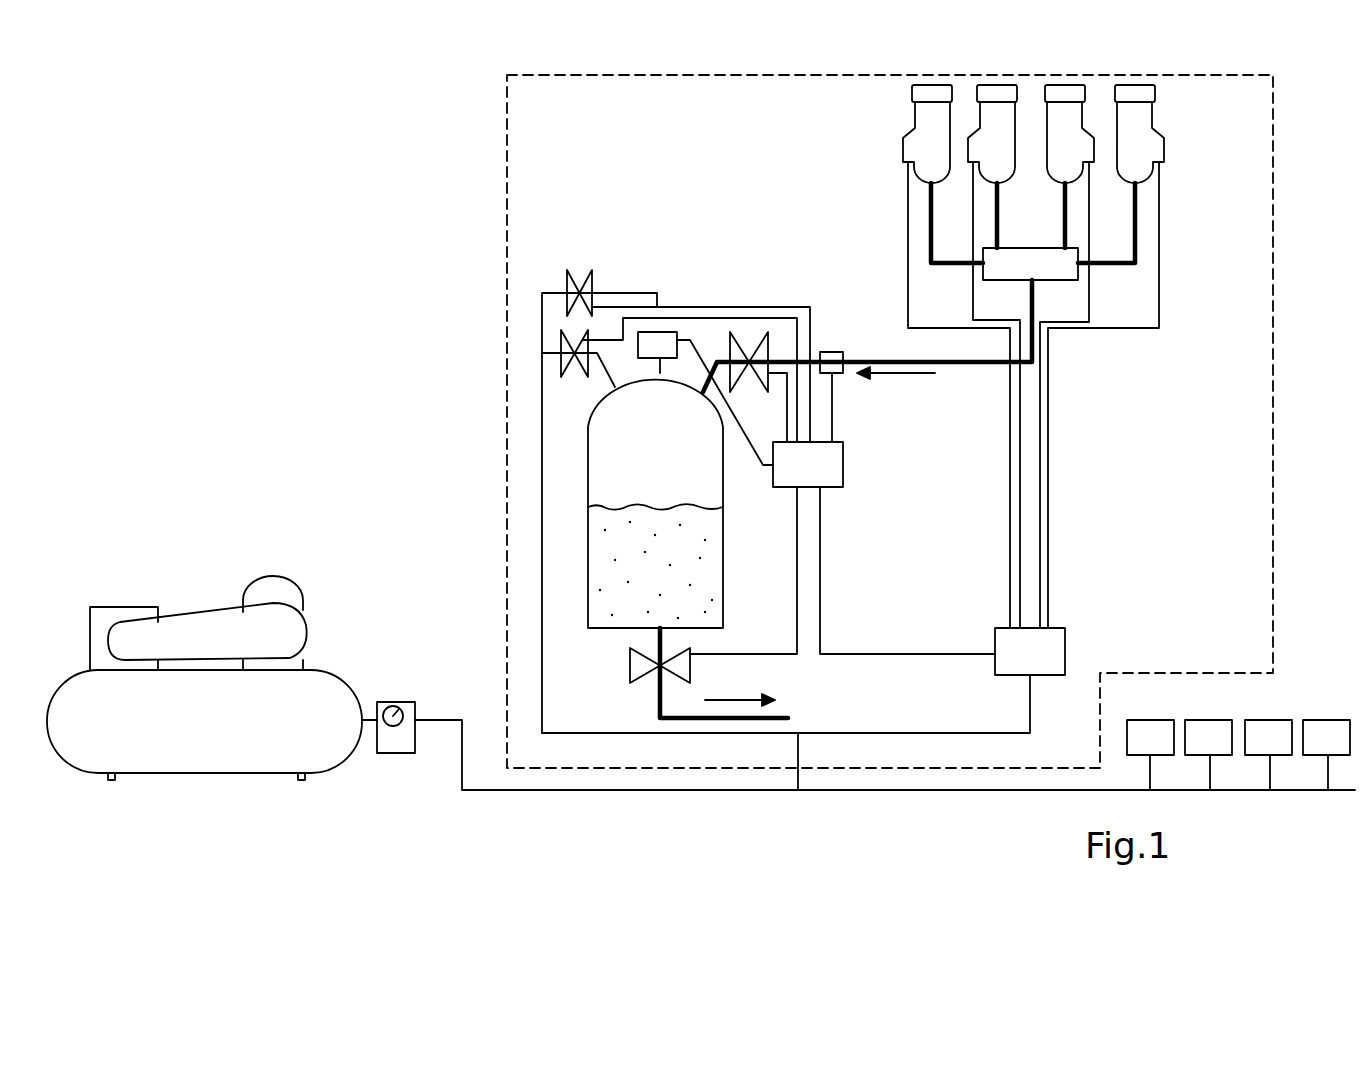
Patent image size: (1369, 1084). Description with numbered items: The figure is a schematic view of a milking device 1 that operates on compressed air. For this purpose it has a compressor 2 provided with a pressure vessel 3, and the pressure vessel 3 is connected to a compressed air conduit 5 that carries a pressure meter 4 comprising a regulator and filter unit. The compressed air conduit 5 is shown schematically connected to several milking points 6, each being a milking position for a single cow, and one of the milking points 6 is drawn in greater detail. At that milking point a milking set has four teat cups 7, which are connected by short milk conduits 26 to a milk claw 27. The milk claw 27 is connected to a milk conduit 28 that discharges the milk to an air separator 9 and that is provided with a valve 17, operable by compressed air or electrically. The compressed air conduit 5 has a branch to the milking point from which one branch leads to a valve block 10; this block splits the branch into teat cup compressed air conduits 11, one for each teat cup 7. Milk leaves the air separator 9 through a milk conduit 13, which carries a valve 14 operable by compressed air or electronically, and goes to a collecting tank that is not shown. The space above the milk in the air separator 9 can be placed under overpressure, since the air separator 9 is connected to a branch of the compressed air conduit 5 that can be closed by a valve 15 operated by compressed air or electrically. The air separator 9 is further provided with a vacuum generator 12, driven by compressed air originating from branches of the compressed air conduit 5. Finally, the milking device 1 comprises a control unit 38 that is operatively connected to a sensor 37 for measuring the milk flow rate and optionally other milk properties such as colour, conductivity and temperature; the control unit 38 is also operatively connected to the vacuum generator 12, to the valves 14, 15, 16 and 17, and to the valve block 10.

The milking device 1 is at (250, 272).
The compressor 2 is at (204, 720).
The pressure vessel 3 is at (215, 748).
The pressure meter 4 is at (393, 745).
The compressed air conduit 5 is at (460, 772).
The milking point 6 is at (507, 268).
The teat cup 7 is at (938, 157).
The air separator 9 is at (683, 398).
The valve block 10 is at (1050, 650).
The teat cup compressed air conduit 11 is at (1013, 578).
The vacuum generator 12 is at (667, 337).
The milk conduit 13 is at (703, 715).
The valve 14 is at (643, 672).
The valve 15 is at (570, 330).
The valve 16 is at (578, 270).
The valve 17 is at (740, 330).
The short milk conduit 26 is at (1072, 202).
The milk claw 27 is at (1068, 270).
The milk conduit 28 is at (872, 358).
The sensor 37 is at (830, 352).
The control unit 38 is at (833, 463).